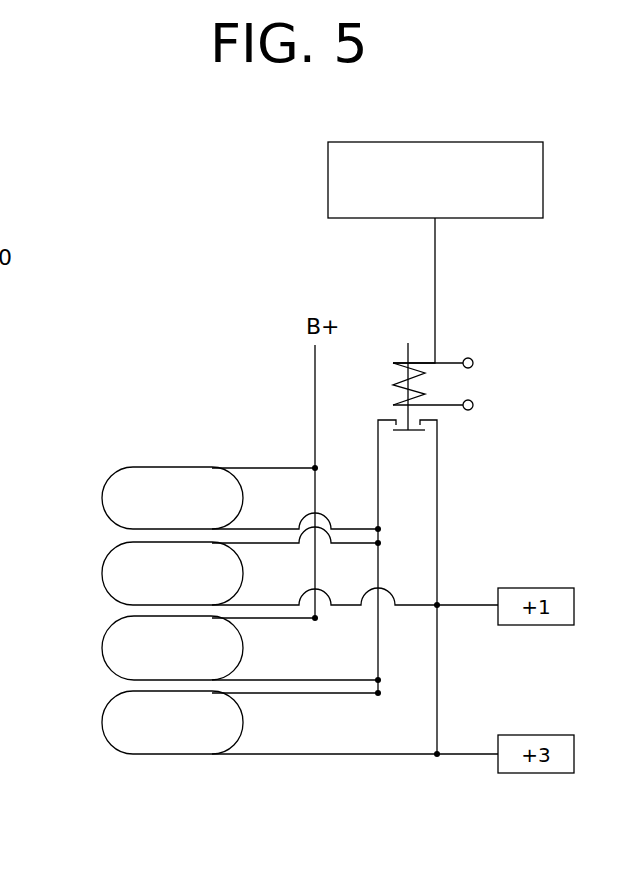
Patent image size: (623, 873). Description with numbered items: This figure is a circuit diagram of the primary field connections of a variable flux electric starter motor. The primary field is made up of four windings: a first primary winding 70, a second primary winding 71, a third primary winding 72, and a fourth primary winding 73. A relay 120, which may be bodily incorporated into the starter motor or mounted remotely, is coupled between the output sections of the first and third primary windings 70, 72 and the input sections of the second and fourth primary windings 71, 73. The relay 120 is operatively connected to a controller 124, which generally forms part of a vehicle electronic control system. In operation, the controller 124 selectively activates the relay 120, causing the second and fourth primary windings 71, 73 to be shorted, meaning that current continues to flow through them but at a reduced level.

The first primary winding 70 is at (108, 470).
The second primary winding 71 is at (108, 548).
The third primary winding 72 is at (107, 670).
The fourth primary winding 73 is at (102, 752).
The relay 120 is at (508, 405).
The controller 124 is at (513, 222).